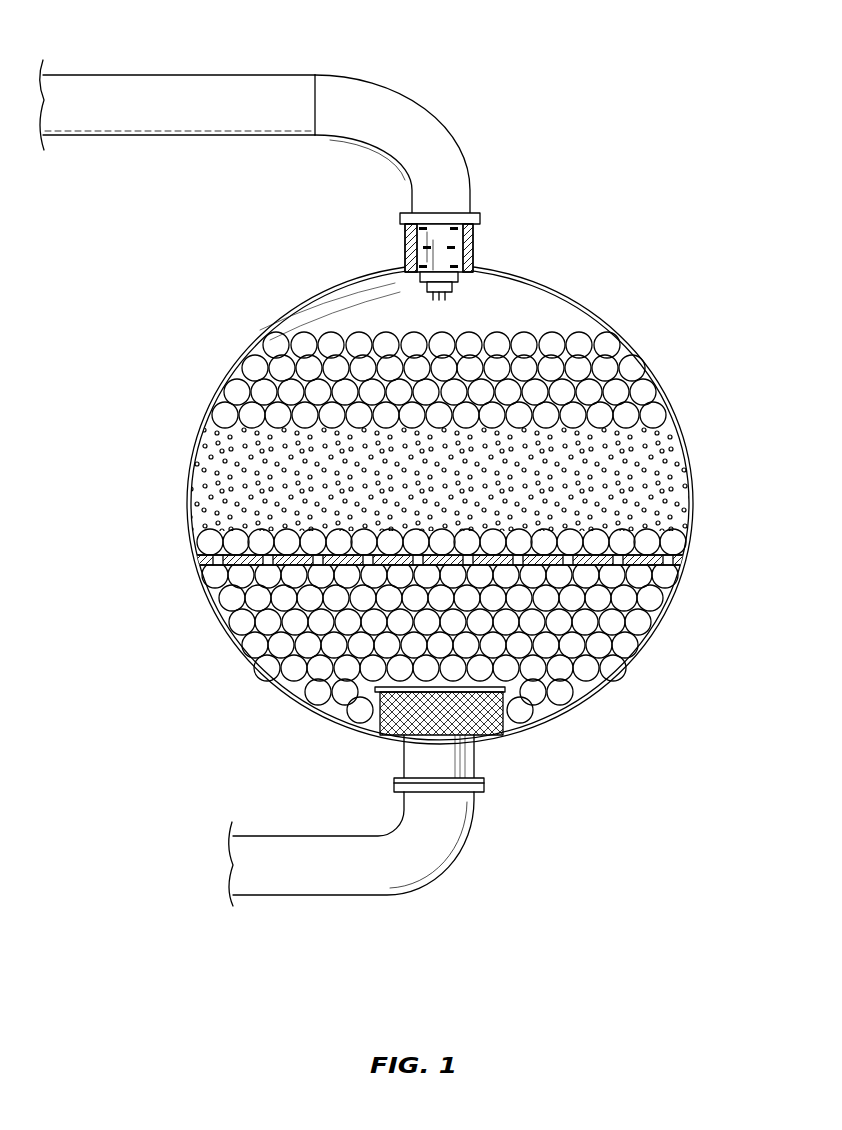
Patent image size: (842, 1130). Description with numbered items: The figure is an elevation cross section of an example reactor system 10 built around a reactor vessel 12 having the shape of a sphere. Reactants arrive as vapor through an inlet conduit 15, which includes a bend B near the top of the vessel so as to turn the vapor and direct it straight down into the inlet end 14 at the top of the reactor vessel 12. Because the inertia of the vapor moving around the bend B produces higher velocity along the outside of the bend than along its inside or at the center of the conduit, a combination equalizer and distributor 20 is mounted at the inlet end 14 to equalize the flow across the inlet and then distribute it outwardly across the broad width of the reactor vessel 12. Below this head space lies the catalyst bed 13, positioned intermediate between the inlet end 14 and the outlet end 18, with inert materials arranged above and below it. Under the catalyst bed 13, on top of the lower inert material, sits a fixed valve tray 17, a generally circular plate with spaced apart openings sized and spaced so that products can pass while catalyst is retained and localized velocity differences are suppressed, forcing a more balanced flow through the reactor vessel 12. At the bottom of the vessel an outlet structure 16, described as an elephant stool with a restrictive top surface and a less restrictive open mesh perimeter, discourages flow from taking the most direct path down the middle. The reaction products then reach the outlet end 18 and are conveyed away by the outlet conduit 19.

The reactor system 10 is at (652, 93).
The inlet conduit 15 is at (218, 75).
The bend B is at (415, 125).
The combination equalizer and distributor 20 is at (398, 249).
The inlet end 14 is at (472, 254).
The reactor vessel 12 is at (653, 372).
The catalyst bed 13 is at (673, 480).
The fixed valve tray 17 is at (673, 567).
The outlet screen box 16 is at (390, 735).
The outlet end 18 is at (485, 740).
The outlet conduit 19 is at (350, 894).